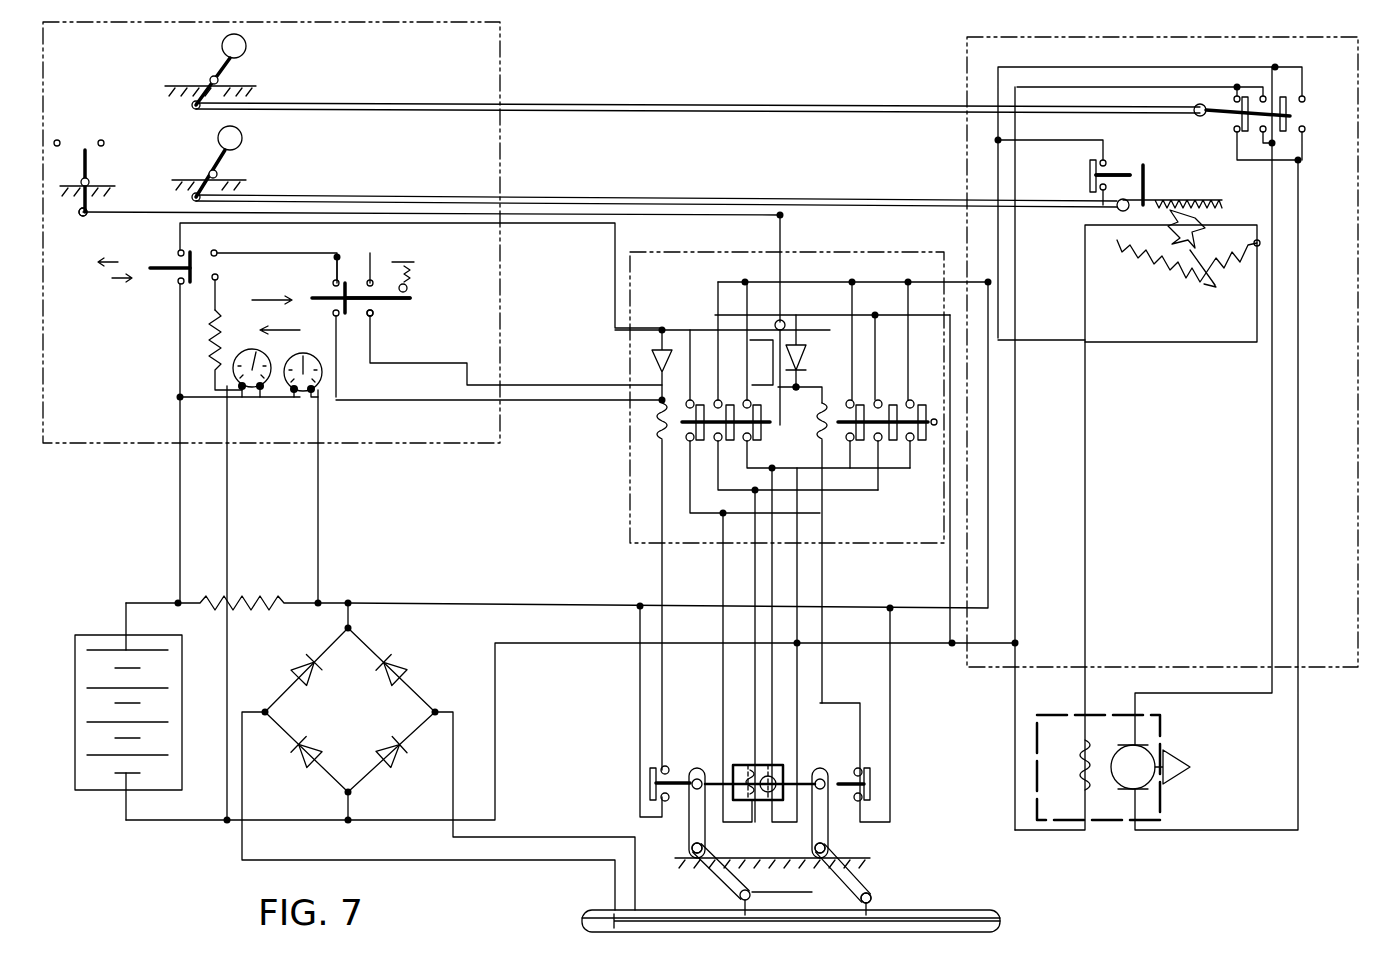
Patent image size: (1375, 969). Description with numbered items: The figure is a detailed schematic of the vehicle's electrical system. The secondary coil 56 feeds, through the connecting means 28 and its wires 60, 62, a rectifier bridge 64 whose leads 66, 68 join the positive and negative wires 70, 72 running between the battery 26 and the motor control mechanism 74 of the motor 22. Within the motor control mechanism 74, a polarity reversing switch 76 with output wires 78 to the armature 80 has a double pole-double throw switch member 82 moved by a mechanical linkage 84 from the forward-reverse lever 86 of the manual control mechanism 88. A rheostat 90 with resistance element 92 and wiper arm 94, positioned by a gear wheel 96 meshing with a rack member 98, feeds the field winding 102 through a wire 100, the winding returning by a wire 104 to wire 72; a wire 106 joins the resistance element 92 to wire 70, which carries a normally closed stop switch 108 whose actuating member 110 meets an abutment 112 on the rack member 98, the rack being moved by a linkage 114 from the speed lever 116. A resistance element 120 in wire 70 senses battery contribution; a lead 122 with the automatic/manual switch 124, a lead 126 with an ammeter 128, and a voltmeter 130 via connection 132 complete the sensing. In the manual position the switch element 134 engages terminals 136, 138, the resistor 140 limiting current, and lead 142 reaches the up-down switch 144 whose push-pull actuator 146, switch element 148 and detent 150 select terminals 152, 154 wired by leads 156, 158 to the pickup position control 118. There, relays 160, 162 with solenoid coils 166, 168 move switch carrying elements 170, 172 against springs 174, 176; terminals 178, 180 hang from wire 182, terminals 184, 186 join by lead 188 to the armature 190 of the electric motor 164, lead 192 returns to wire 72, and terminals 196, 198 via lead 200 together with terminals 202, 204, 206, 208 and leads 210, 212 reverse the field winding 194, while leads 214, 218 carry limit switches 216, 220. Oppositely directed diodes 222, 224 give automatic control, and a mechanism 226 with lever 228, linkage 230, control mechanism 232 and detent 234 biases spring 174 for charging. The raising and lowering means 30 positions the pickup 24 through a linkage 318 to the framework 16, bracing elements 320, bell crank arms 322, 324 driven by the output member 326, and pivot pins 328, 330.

The framework 16 is at (762, 852).
The motor 22 is at (1098, 712).
The pickup 24 is at (1000, 902).
The battery 26 is at (122, 618).
The connecting means 28 is at (542, 590).
The raising and lowering means 30 is at (846, 830).
The secondary coil 56 is at (665, 910).
The wire 60 is at (565, 830).
The wire 62 is at (410, 865).
The rectifier bridge 64 is at (412, 666).
The lead 66 is at (352, 616).
The lead 68 is at (350, 798).
The wire 70 is at (438, 604).
The wire 72 is at (398, 815).
The motor control mechanism 74 is at (1349, 328).
The polarity reversing switch 76 is at (1305, 100).
The output wires 78 is at (1298, 420).
The armature 80 is at (1150, 767).
The double pole-double throw switch member 82 is at (1232, 118).
The mechanical linkage 84 is at (878, 100).
The forward-reverse control lever 86 is at (220, 45).
The manual control mechanism 88 is at (432, 455).
The rheostat 90 is at (1209, 191).
The resistance element 92 is at (1195, 290).
The wiper arm 94 is at (1196, 260).
The gear wheel 96 is at (1186, 240).
The rack member 98 is at (1160, 195).
The wire 100 is at (1086, 590).
The field winding 102 is at (1080, 760).
The wire 104 is at (1013, 720).
The wire 106 is at (1046, 338).
The stop switch 108 is at (1083, 182).
The actuating member 110 is at (1112, 165).
The abutment 112 is at (1140, 172).
The linkage 114 is at (800, 200).
The speed control lever 116 is at (240, 170).
The pickup position control 118 is at (638, 540).
The resistance element 120 is at (254, 592).
The lead 122 is at (518, 232).
The automatic/manual switch 124 is at (166, 249).
The lead 126 is at (322, 530).
The ammeter 128 is at (318, 398).
The voltmeter 130 is at (266, 355).
The connection 132 is at (230, 530).
The switch element 134 is at (218, 276).
The switch terminal 136 is at (216, 292).
The switch terminal 138 is at (216, 253).
The resistor 140 is at (222, 326).
The lead 142 is at (337, 280).
The up-down switch 144 is at (406, 303).
The push-pull switch actuator 146 is at (340, 360).
The switch element 148 is at (372, 260).
The detent mechanism 150 is at (417, 295).
The switch terminals 152 is at (332, 270).
The switch terminals 154 is at (372, 318).
The lead 156 is at (580, 408).
The lead 158 is at (578, 388).
The relay 160 is at (643, 481).
The relay 162 is at (942, 479).
The electric motor 164 is at (783, 752).
The solenoid coil 166 is at (655, 586).
The solenoid coil 168 is at (800, 386).
The switch carrying element 170 is at (726, 450).
The switch carrying element 172 is at (880, 345).
The spring 174 is at (782, 424).
The spring 176 is at (901, 405).
The switch terminal 178 is at (733, 370).
The switch terminal 180 is at (903, 347).
The wire 182 is at (803, 285).
The switch terminal 184 is at (779, 632).
The switch terminal 186 is at (932, 480).
The lead 188 is at (828, 468).
The armature 190 is at (790, 760).
The lead 192 is at (795, 740).
The field winding 194 is at (730, 760).
The switch terminal 196 is at (706, 369).
The switch terminal 198 is at (904, 350).
The lead 200 is at (792, 315).
The switch terminal 202 is at (743, 479).
The switch terminal 204 is at (797, 468).
The switch terminal 206 is at (869, 490).
The switch terminal 208 is at (898, 480).
The lead 210 is at (730, 667).
The lead 212 is at (749, 656).
The lead 214 is at (608, 720).
The limit switch 216 is at (638, 786).
The lead 218 is at (888, 690).
The limit switch 220 is at (879, 781).
The diode 222 is at (645, 360).
The diode 224 is at (803, 348).
The mechanism 226 is at (796, 211).
The lever 228 is at (775, 272).
The linkage 230 is at (650, 218).
The control mechanism 232 is at (93, 176).
The detent 234 is at (82, 225).
The linkage 318 is at (872, 876).
The bracing elements 320 is at (878, 898).
The bell crank arms 322 is at (832, 890).
The bell crank arms 324 is at (700, 872).
The double ended reciprocating output member 326 is at (812, 776).
The pivot pin 328 is at (705, 846).
The pivot pin 330 is at (830, 848).